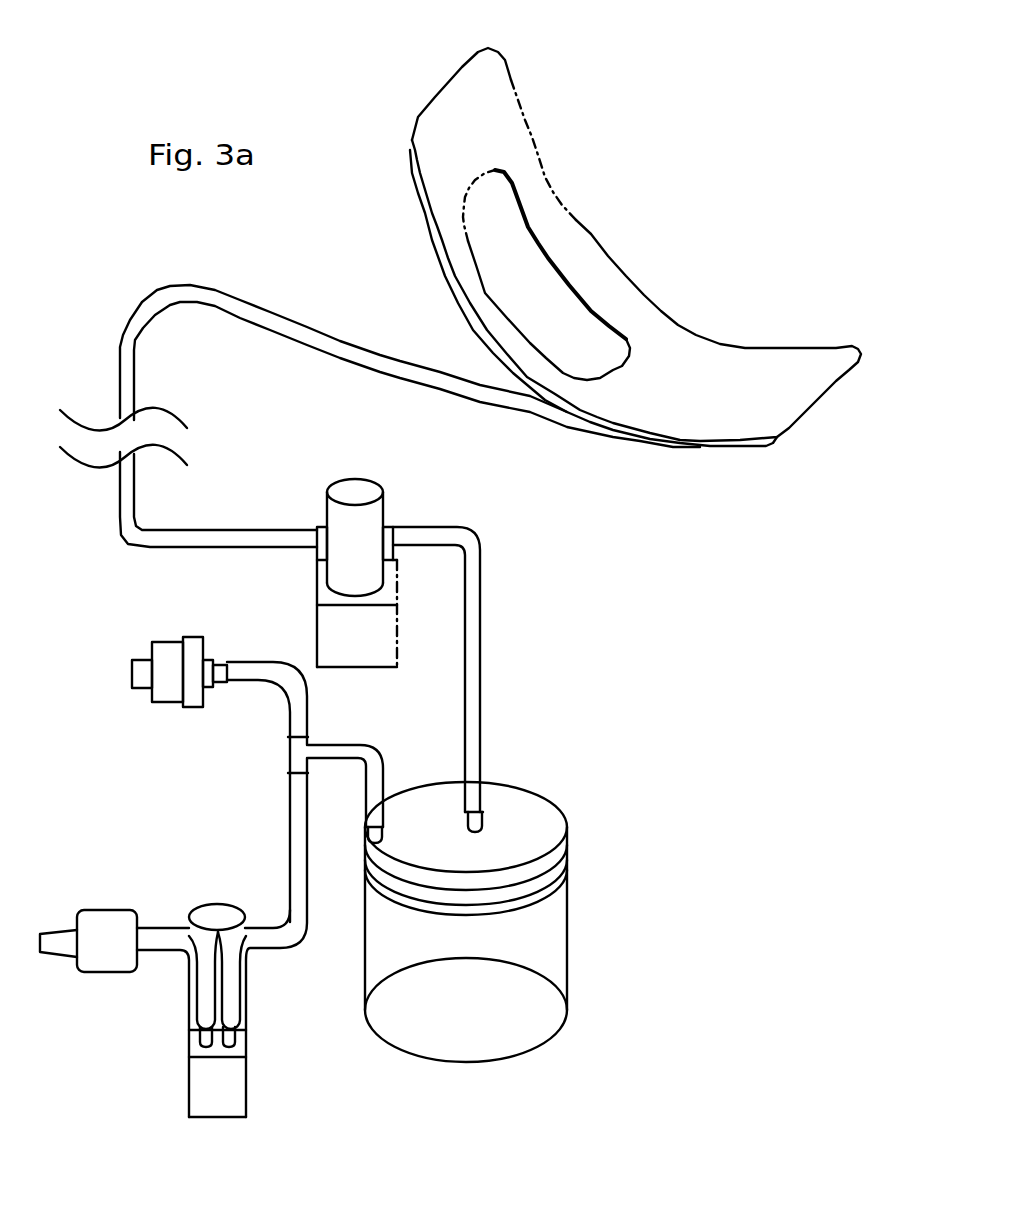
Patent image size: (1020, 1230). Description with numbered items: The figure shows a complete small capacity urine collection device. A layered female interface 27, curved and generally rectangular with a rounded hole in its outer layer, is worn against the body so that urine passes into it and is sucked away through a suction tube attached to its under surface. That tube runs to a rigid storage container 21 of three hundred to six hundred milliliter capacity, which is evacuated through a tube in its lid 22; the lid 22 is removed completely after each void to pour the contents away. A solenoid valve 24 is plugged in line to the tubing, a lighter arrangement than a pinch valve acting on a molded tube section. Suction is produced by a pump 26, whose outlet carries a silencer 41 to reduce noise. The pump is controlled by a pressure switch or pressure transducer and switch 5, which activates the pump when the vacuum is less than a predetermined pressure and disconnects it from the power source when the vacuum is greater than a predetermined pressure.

The layered female interface 27 is at (635, 247).
The solenoid valve 24 is at (355, 533).
The pressure switch or pressure transducer and switch 5 is at (170, 667).
The lid 22 is at (373, 835).
The rigid storage container 21 is at (570, 942).
The silencer 41 is at (103, 920).
The pump 26 is at (223, 1095).